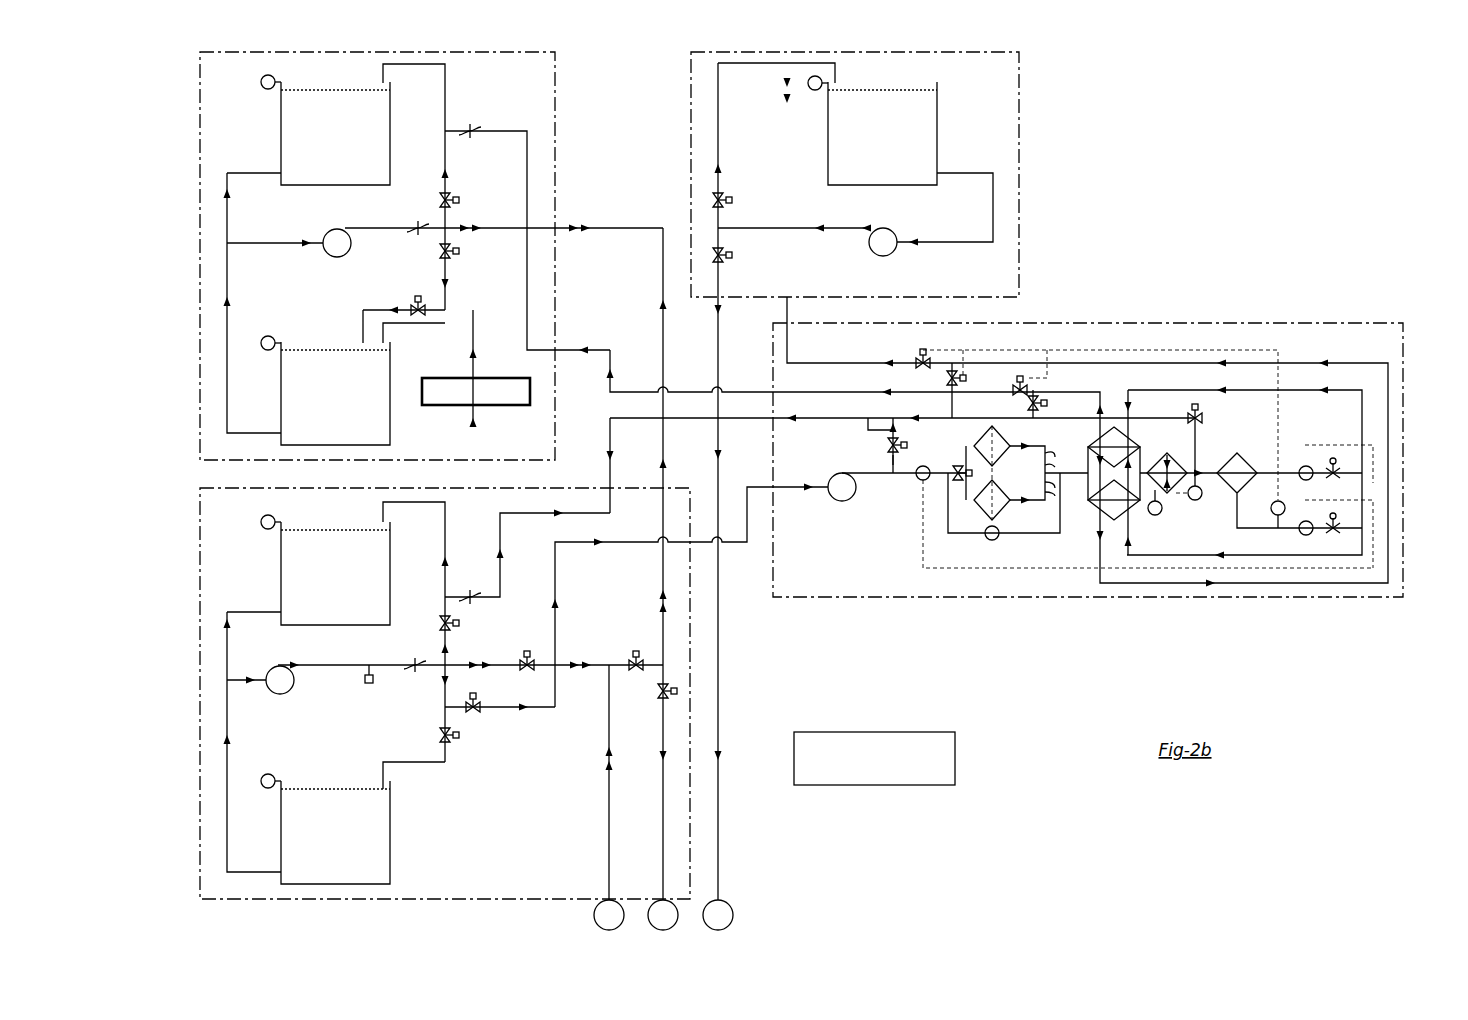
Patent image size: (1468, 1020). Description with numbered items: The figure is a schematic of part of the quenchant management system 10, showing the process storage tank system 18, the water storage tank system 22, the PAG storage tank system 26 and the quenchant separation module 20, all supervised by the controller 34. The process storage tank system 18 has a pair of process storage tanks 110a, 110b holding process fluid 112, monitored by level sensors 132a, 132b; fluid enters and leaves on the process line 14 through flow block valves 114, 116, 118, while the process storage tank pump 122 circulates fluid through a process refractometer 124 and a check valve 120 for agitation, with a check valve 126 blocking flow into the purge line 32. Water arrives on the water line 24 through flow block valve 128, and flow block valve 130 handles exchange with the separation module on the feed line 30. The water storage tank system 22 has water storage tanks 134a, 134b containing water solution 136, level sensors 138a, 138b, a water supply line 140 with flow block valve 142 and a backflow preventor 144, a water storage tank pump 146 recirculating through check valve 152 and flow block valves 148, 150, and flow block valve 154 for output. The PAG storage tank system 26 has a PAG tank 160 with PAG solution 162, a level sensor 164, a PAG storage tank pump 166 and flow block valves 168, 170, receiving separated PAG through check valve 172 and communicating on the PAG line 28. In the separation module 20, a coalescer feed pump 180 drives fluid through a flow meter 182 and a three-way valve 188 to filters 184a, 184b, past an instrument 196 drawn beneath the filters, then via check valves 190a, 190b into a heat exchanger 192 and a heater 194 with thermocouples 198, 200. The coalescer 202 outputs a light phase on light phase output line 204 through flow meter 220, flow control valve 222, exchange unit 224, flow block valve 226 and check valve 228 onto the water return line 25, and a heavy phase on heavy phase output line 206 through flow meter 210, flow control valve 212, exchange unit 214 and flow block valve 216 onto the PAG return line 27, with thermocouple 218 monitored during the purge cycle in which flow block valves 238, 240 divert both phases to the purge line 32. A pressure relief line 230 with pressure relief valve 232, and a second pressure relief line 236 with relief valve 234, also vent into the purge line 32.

The quenchant management system 10 is at (1188, 128).
The process line 14 is at (592, 842).
The process storage tank system 18 is at (200, 686).
The quenchant separation module 20 is at (1306, 323).
The water storage tank system 22 is at (555, 120).
The water line 24 is at (662, 802).
The water return line 25 is at (588, 350).
The PAG storage tank system 26 is at (1019, 90).
The PAG return line 27 is at (787, 312).
The PAG line 28 is at (718, 838).
The feed line 30 is at (568, 556).
The purge line 32 is at (555, 514).
The controller 34 is at (838, 736).
The process storage tank 110a is at (392, 570).
The process storage tank 110b is at (392, 820).
The process fluid 112 is at (335, 703).
The flow block valve 114 is at (528, 660).
The flow block valve 116 is at (440, 623).
The flow block valve 118 is at (452, 740).
The check valve 120 is at (410, 670).
The process storage tank pump 122 is at (294, 690).
The process refractometer 124 is at (366, 682).
The check valve 126 is at (470, 589).
The flow block valve 128 is at (636, 652).
The flow block valve 130 is at (472, 716).
The level sensor 132a is at (260, 525).
The level sensor 132b is at (266, 776).
The water storage tank 134a is at (395, 128).
The water storage tank 134b is at (281, 374).
The water solution 136 is at (335, 263).
The level sensor 138a is at (261, 85).
The level sensor 138b is at (264, 336).
The water supply line 140 is at (474, 310).
The flow block valve 142 is at (416, 302).
The backflow preventor 144 is at (461, 406).
The water storage tank pump 146 is at (326, 240).
The flow block valve 148 is at (458, 204).
The flow block valve 150 is at (458, 254).
The check valve 152 is at (414, 230).
The flow block valve 154 is at (663, 692).
The PAG tank 160 is at (938, 140).
The PAG solution 162 is at (882, 133).
The level sensor 164 is at (815, 90).
The PAG storage tank pump 166 is at (887, 256).
The flow block valve 168 is at (730, 198).
The flow block valve 170 is at (732, 254).
The check valve 172 is at (784, 90).
The coalescer feed pump 180 is at (838, 500).
The flow meter 182 is at (919, 478).
The filter 184a is at (976, 437).
The filter 184b is at (1002, 504).
The 3-way valve 188 is at (952, 472).
The check valve 190a is at (1056, 445).
The check valve 190b is at (1026, 480).
The heat exchanger 192 is at (1088, 480).
The heater 194 is at (1150, 462).
The sensor 196 is at (988, 539).
The thermocouple 198 is at (1158, 516).
The thermocouple 200 is at (1198, 500).
The coalescer 202 is at (1238, 454).
The light phase output line 204 is at (1306, 466).
The heavy phase output line 206 is at (1304, 536).
The flow meter 210 is at (1320, 536).
The flow control valve 212 is at (1334, 536).
The exchange unit 214 is at (1120, 522).
The flow block valve 216 is at (914, 352).
The thermocouple 218 is at (1276, 516).
The flow meter 220 is at (1303, 476).
The flow control valve 222 is at (1339, 476).
The second heat exchange unit 224 is at (1126, 430).
The flow block valve 226 is at (1020, 376).
The check valve 228 is at (466, 130).
The pressure relief line 230 is at (892, 459).
The pressure relief valve 232 is at (892, 431).
The relief valve 234 is at (1194, 410).
The second pressure relief line 236 is at (1195, 425).
The flow block valve 238 is at (945, 378).
The flow block valve 240 is at (1027, 405).